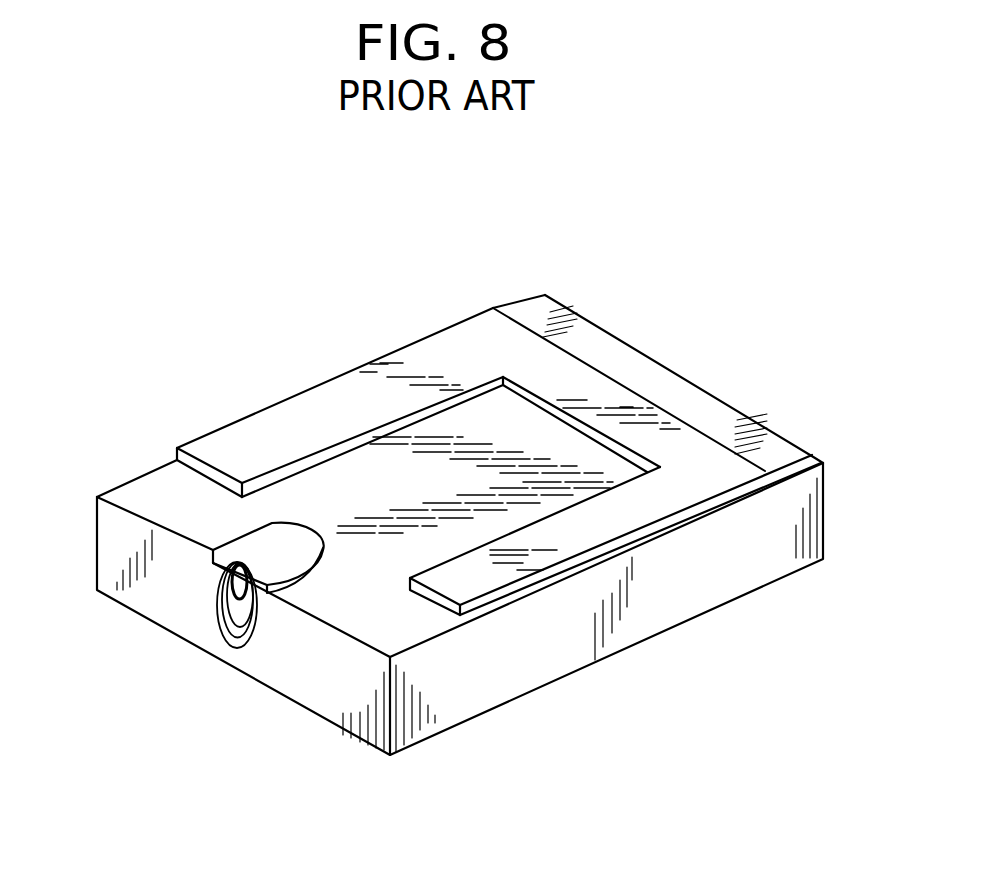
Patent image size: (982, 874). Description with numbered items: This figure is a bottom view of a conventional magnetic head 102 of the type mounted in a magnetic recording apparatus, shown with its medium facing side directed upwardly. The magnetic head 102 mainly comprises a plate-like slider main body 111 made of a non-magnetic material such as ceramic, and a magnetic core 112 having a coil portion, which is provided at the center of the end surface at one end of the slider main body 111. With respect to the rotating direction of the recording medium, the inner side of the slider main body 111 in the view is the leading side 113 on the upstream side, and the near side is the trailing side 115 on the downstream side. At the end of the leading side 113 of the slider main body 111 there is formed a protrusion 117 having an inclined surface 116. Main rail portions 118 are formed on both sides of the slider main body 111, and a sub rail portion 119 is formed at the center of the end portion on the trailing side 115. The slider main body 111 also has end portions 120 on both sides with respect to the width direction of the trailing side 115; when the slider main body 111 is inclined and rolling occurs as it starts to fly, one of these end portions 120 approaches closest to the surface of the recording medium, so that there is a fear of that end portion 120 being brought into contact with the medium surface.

The magnetic head 102 is at (435, 313).
The slider main body 111 is at (630, 623).
The magnetic core 112 is at (243, 592).
The leading side 113 is at (679, 370).
The trailing side 115 is at (183, 558).
The inclined surface 116 is at (742, 418).
The protrusion 117 is at (567, 371).
The main rail portions 118 is at (332, 400).
The sub rail portion 119 is at (282, 548).
The end portions 120 is at (147, 497).